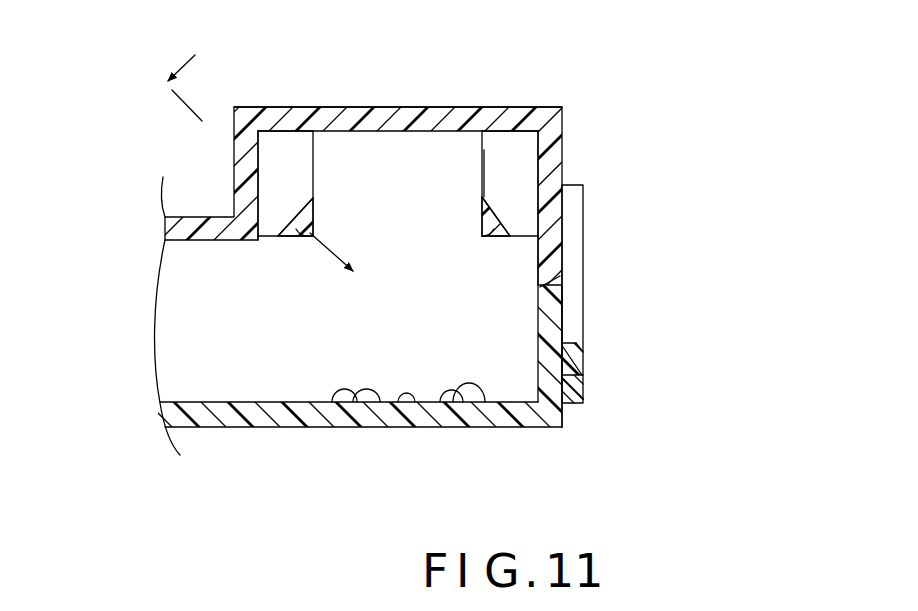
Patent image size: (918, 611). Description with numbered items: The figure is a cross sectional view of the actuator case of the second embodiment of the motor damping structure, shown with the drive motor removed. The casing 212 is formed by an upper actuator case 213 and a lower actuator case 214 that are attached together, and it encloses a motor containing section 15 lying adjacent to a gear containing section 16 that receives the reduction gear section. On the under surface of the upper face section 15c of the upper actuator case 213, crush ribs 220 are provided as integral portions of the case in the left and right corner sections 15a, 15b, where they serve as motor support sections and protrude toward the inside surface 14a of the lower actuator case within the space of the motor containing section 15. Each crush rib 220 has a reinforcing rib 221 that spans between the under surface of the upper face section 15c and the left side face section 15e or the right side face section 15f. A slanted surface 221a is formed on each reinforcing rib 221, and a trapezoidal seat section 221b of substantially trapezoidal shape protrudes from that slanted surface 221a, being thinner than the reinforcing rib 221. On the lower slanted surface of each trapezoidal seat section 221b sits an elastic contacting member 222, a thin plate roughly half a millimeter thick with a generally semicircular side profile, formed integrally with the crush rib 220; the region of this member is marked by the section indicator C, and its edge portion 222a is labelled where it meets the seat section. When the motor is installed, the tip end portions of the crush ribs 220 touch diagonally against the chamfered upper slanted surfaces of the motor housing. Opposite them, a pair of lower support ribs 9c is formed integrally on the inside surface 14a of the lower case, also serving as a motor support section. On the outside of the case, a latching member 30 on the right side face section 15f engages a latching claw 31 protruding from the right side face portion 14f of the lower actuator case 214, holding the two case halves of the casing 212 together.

The motor containing section 15 is at (416, 326).
The gear containing section 16 is at (218, 326).
The left corner section 15a is at (272, 141).
The right corner section 15b is at (524, 139).
The upper face section 15c is at (417, 107).
The left side face section 15e is at (258, 203).
The right side face section 15f is at (538, 233).
The crush rib 220 is at (205, 42).
The reinforcing rib 221 is at (268, 173).
The elastic contacting member 222 is at (312, 208).
The slanted surface 221a is at (484, 205).
The trapezoidal seat section 221b is at (296, 221).
The rounded corner of protrusion 222a is at (306, 232).
The upper actuator case 213 is at (562, 250).
The latching member 30 is at (595, 274).
The right side face portion 14f is at (562, 315).
The latching claw 31 is at (562, 342).
The lower actuator case 214 is at (562, 418).
The casing 212 is at (730, 248).
The inside surface 14a is at (412, 402).
The lower support rib 9c is at (334, 402).
The section line C is at (279, 154).